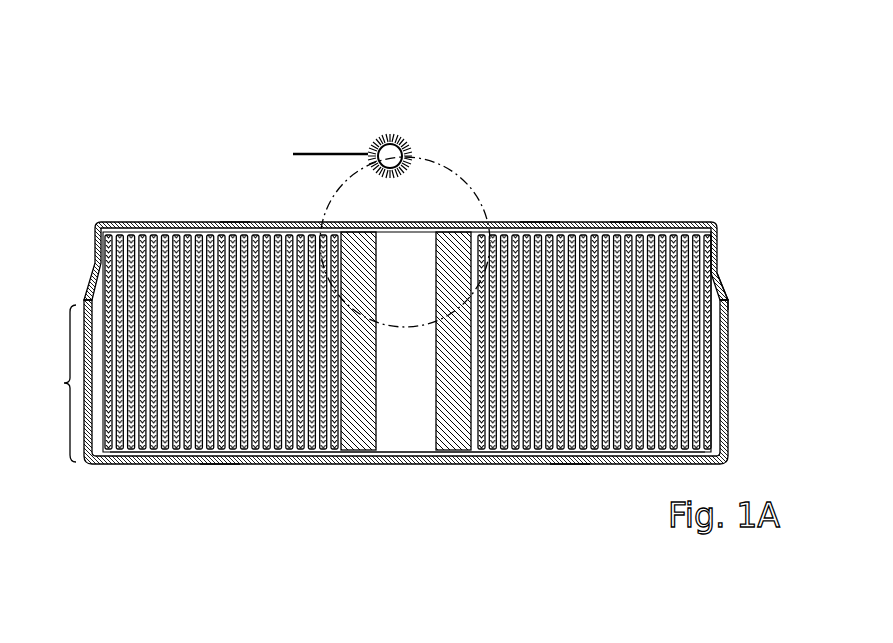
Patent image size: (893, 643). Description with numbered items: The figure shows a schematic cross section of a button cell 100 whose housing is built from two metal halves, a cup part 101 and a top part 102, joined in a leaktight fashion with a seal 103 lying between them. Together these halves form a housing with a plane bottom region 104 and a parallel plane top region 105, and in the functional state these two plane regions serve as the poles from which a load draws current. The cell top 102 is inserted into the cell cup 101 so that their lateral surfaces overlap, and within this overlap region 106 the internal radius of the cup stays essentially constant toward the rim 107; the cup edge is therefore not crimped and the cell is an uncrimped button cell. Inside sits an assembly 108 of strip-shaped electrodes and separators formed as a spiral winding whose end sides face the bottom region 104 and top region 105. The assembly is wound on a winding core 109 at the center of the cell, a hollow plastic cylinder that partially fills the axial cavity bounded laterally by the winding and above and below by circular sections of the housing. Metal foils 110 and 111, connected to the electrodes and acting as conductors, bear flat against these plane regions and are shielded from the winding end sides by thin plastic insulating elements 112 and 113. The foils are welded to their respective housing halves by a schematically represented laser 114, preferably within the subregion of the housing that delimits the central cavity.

The button cell 100 is at (165, 129).
The cup part 101 is at (731, 397).
The top part 102 is at (92, 238).
The seal 103 is at (724, 300).
The plane bottom region 104 is at (303, 462).
The plane top region 105 is at (233, 230).
The overlap region 106 is at (48, 383).
The rim 107 is at (729, 307).
The assembly of strip-shaped electrodes and separators 108 is at (165, 236).
The winding core 109 is at (412, 260).
The metal foil 110 is at (210, 236).
The metal foil 111 is at (221, 464).
The insulating element 112 is at (630, 224).
The insulating element 113 is at (568, 464).
The laser 114 is at (414, 131).